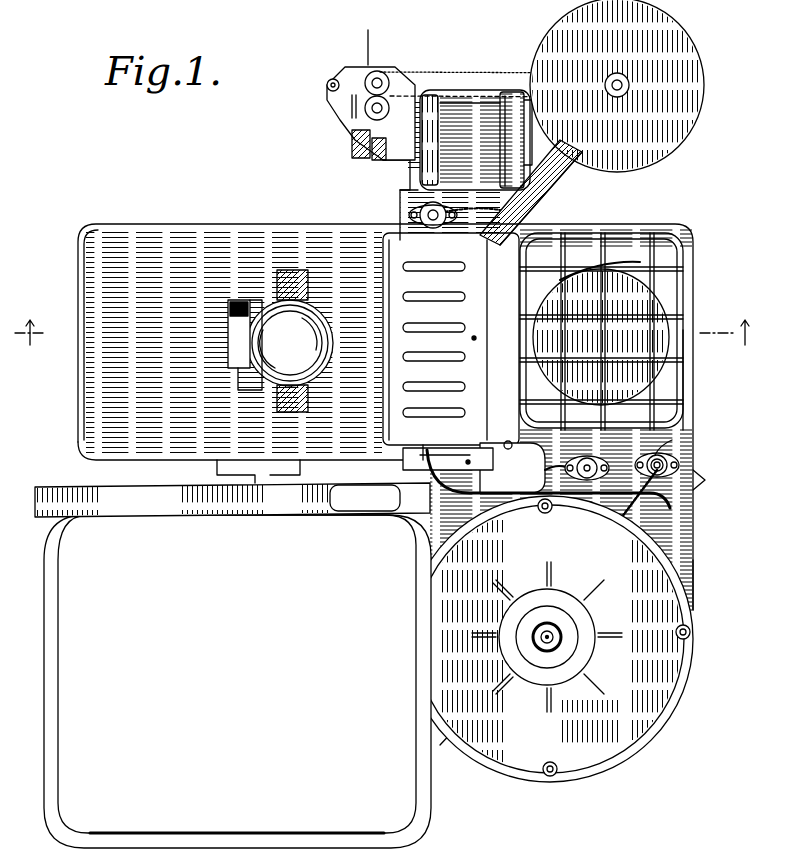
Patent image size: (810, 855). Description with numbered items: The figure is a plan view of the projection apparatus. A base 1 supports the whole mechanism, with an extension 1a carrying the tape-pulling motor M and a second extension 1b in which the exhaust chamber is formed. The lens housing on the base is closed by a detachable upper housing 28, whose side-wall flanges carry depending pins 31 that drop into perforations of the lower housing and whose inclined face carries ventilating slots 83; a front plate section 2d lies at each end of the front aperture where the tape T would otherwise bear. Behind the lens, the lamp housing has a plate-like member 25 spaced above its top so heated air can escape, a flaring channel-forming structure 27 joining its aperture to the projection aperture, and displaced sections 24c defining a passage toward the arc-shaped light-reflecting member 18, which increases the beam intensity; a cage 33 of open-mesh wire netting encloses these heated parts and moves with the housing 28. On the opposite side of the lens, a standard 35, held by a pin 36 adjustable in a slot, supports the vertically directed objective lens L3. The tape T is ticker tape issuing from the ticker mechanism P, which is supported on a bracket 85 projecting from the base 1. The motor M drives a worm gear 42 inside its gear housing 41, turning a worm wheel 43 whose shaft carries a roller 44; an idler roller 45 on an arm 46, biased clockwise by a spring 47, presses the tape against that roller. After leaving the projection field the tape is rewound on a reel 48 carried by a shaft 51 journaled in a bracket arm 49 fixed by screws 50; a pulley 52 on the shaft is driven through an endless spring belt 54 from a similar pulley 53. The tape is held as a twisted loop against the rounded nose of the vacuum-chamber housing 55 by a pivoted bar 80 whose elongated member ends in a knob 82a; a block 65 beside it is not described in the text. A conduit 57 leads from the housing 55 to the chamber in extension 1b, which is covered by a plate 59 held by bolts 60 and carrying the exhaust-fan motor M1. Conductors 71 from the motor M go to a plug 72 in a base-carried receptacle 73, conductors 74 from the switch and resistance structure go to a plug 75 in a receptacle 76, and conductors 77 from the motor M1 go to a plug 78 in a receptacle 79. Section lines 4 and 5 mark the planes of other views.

The base 1 is at (208, 245).
The base extension 1a is at (410, 183).
The base extension 1b is at (678, 545).
The front plate section 2d is at (390, 322).
The section line 4 is at (387, 338).
The section line 5 is at (577, 623).
The light-reflecting member 18 is at (690, 245).
The displaced sections 24c is at (640, 225).
The plate-like member 25 is at (635, 298).
The channel-forming structure 27 is at (596, 230).
The upper housing 28 is at (402, 280).
The depending pin 31 is at (565, 185).
The cage 33 is at (690, 380).
The standard 35 is at (252, 312).
The pin 36 is at (300, 398).
The gear housing 41 is at (340, 122).
The worm gear 42 is at (378, 160).
The worm wheel 43 is at (352, 140).
The roller 44 is at (395, 92).
The idler roller 45 is at (378, 70).
The arm 46 is at (345, 78).
The spring 47 is at (350, 100).
The reel 48 is at (686, 58).
The bracket arm 49 is at (545, 195).
The screws 50 is at (500, 200).
The shaft 51 is at (622, 92).
The pulley 52 is at (630, 86).
The pulley 53 is at (369, 35).
The endless spring belt 54 is at (488, 73).
The housing 55 is at (424, 456).
The conduit 57 is at (476, 512).
The plate 59 is at (640, 724).
The bolts 60 is at (548, 512).
The switch block 65 is at (512, 467).
The conductors 71 is at (440, 226).
The connecting plug 72 is at (410, 200).
The receptacle 73 is at (415, 230).
The conductors 74 is at (562, 468).
The plug 75 is at (587, 458).
The receptacle 76 is at (648, 458).
The conductors 77 is at (598, 555).
The plug 78 is at (672, 462).
The receptacle 79 is at (672, 440).
The bar 80 is at (455, 458).
The knob 82a is at (372, 490).
The slots 83 is at (460, 300).
The bracket 85 is at (290, 480).
The objective lens L3 is at (282, 358).
The motor M is at (463, 100).
The electric motor M1 is at (560, 670).
The ticker mechanism P is at (75, 750).
The tape T is at (505, 100).